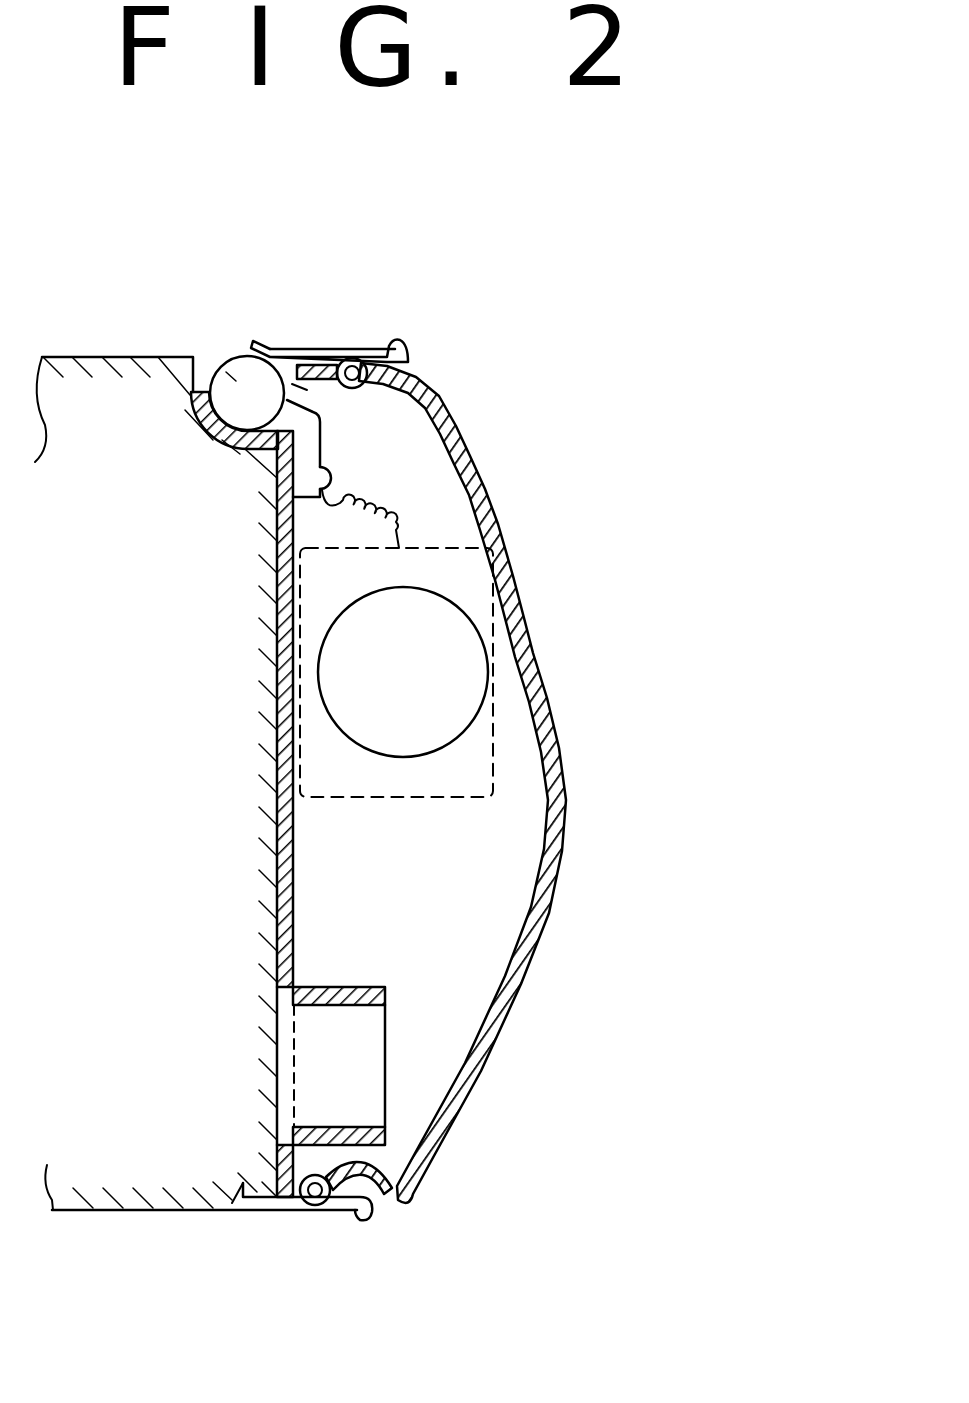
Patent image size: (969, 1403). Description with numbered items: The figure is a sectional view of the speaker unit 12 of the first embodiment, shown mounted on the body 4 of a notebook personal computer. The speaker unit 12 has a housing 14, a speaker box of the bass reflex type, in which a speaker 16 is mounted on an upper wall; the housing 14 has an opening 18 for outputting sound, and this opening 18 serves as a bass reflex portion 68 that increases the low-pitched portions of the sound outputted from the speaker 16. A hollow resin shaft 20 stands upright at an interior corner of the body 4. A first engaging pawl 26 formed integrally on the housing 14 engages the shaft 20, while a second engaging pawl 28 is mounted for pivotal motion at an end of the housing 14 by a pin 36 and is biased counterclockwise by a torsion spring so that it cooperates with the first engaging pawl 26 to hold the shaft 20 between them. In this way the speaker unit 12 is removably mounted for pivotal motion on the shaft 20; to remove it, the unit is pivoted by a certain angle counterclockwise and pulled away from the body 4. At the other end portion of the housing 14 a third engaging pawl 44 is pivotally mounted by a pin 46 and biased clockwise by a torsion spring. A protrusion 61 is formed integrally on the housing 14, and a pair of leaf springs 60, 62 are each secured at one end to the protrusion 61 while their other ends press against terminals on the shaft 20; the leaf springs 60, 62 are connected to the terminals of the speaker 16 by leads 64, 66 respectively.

The body 4 is at (98, 1212).
The speaker unit 12 is at (574, 783).
The housing 14 is at (620, 748).
The speaker 16 is at (453, 670).
The opening 18 is at (288, 1060).
The hollow shaft 20 is at (222, 368).
The first engaging pawl 26 is at (207, 437).
The second engaging pawl 28 is at (410, 352).
The pin 36 is at (353, 358).
The third engaging pawl 44 is at (252, 1205).
The pin 46 is at (320, 1207).
The leaf spring 60 is at (473, 440).
The leaf spring 62 is at (321, 433).
The protrusion 61 is at (334, 477).
The lead 64 is at (524, 519).
The lead 66 is at (405, 497).
The bass reflex portion 68 is at (370, 1062).